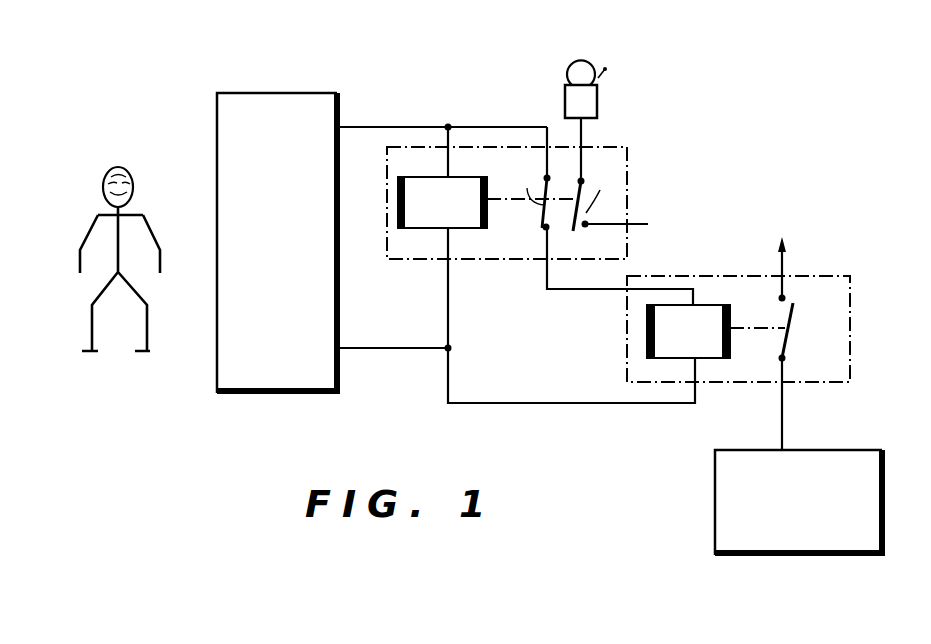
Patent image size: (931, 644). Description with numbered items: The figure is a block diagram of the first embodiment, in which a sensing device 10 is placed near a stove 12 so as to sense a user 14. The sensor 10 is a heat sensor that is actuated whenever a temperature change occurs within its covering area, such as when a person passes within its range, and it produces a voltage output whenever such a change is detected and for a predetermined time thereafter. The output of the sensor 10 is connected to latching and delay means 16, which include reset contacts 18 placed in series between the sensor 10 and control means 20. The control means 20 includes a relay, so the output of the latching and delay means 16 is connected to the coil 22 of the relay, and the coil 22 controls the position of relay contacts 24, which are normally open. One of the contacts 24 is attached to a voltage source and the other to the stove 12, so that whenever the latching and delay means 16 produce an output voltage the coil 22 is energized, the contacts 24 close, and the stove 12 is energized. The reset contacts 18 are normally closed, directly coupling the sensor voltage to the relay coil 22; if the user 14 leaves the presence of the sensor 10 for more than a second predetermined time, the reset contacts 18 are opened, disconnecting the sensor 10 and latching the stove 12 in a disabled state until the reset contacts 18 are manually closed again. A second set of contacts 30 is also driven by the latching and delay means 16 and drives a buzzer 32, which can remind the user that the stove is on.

The sensing device 10 is at (300, 93).
The stove 12 is at (780, 557).
The user 14 is at (118, 167).
The latching and delay means 16 is at (545, 186).
The reset contacts 18 is at (543, 223).
The control means 20 is at (833, 283).
The coil 22 is at (700, 346).
The relay contacts 24 is at (813, 333).
The second set of contacts 30 is at (620, 175).
The buzzer 32 is at (590, 62).